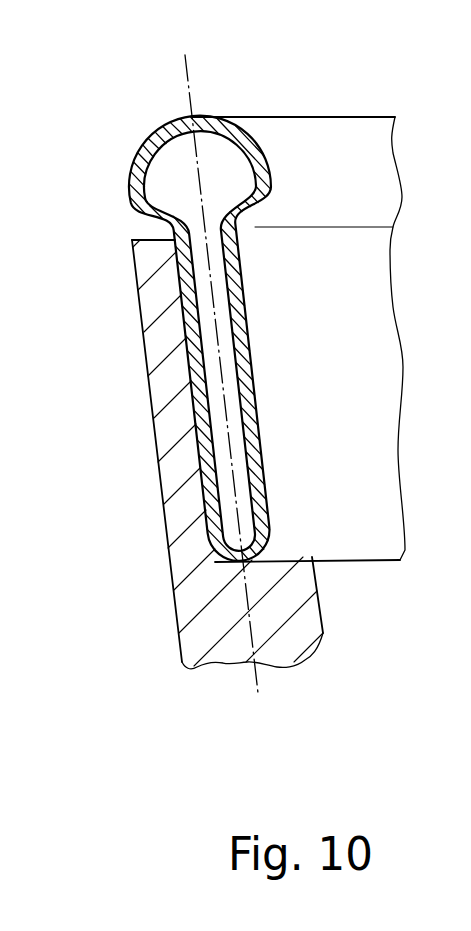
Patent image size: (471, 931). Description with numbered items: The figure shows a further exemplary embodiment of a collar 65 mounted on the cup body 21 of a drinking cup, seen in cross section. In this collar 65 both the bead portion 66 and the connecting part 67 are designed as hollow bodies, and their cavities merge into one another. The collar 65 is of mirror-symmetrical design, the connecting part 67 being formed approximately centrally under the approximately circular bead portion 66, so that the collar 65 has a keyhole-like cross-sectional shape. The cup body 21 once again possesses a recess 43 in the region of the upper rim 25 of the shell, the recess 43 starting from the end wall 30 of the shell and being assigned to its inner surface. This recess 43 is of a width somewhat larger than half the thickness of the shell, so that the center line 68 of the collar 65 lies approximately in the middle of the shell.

The collar 65 is at (236, 94).
The bead portion 66 is at (163, 117).
The connecting part 67 is at (243, 350).
The end wall 30 is at (145, 237).
The upper rim 25 is at (157, 274).
The cup body 21 is at (182, 577).
The recess 43 is at (218, 565).
The center line 68 is at (258, 677).